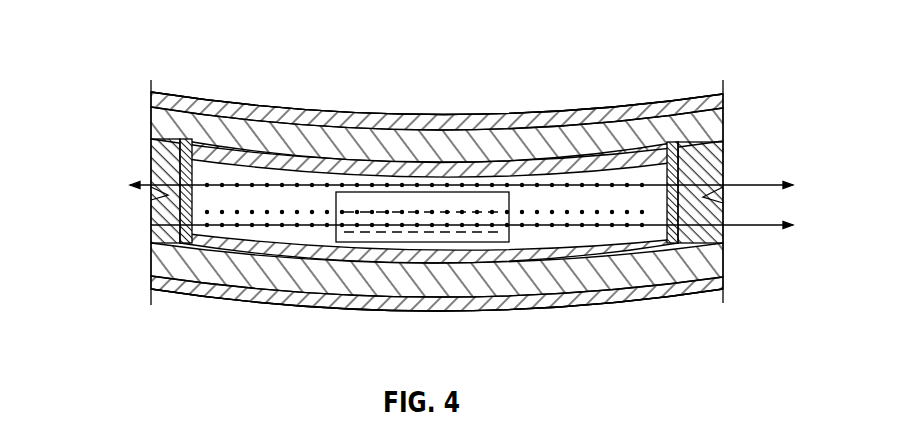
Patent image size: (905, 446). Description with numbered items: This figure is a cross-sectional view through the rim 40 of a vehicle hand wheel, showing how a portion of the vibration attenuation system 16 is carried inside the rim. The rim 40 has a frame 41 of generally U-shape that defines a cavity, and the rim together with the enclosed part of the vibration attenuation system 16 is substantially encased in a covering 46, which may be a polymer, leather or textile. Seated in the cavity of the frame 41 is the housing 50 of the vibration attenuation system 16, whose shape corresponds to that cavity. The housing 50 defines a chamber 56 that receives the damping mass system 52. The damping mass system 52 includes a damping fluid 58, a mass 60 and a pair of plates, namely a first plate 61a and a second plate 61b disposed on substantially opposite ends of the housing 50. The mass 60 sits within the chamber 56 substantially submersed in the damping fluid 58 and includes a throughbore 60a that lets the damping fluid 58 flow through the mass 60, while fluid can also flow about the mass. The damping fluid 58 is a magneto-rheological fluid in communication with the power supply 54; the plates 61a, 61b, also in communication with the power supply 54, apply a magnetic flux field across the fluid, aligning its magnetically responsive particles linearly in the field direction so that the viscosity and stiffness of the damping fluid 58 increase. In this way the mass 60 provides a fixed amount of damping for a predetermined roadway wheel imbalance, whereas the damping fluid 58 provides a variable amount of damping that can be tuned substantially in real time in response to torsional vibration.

The vibration attenuation system 16 is at (180, 53).
The rim 40 is at (567, 337).
The frame 41 is at (707, 128).
The covering 46 is at (403, 127).
The housing 50 is at (737, 151).
The damping mass system 52 is at (754, 283).
The power supply 54 is at (140, 208).
The chamber 56 is at (665, 172).
The damping fluid 58 is at (577, 203).
The mass 60 is at (362, 192).
The throughbore 60a is at (405, 208).
The first plate 61a is at (162, 167).
The second plate 61b is at (725, 236).